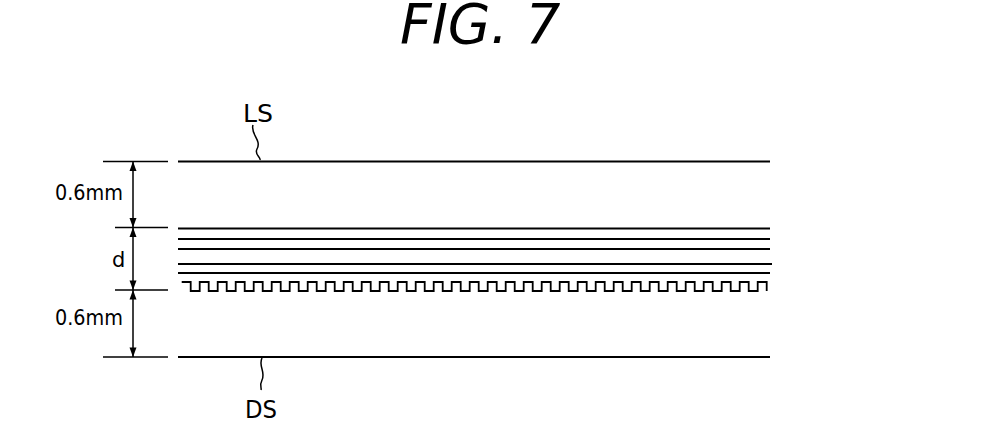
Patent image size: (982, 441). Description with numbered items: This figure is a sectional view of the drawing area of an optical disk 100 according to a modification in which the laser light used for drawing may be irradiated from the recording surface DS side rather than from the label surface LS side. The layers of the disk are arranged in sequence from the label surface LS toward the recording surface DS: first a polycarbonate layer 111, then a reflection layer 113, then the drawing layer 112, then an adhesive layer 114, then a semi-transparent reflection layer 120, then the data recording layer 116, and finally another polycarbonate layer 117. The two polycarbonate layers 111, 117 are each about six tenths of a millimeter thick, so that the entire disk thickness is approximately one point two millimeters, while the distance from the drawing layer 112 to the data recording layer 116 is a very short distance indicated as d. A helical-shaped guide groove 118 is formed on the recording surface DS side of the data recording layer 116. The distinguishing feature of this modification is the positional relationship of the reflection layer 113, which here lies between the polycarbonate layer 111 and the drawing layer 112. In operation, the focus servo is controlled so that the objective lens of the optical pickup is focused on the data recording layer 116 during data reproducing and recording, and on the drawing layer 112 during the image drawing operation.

The optical disk 100 is at (510, 150).
The polycarbonate layer 111 is at (760, 194).
The reflection layer 113 is at (772, 233).
The drawing layer 112 is at (772, 243).
The adhesive layer 114 is at (772, 255).
The semi-transparent reflection layer 120 is at (772, 268).
The data recording layer 116 is at (767, 282).
The helical-shaped groove 118 is at (767, 291).
The polycarbonate layer 117 is at (760, 333).